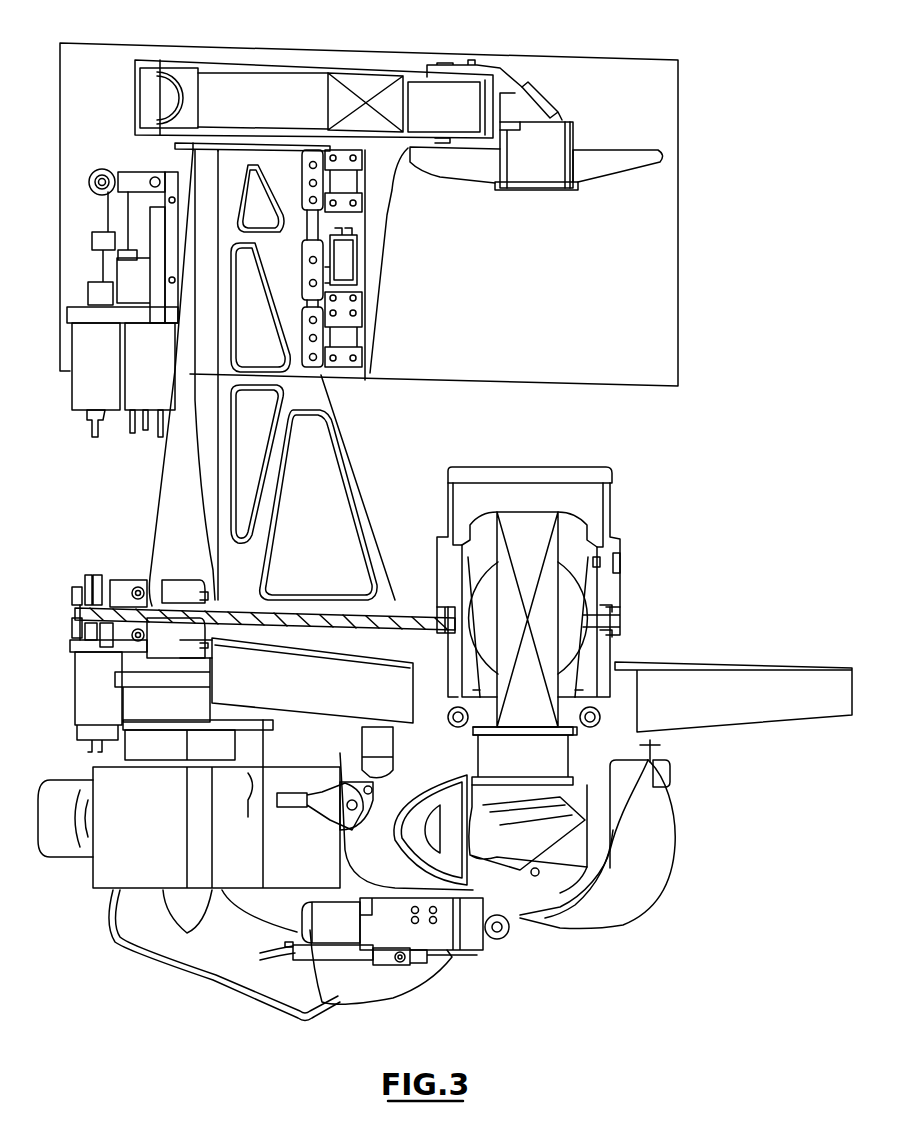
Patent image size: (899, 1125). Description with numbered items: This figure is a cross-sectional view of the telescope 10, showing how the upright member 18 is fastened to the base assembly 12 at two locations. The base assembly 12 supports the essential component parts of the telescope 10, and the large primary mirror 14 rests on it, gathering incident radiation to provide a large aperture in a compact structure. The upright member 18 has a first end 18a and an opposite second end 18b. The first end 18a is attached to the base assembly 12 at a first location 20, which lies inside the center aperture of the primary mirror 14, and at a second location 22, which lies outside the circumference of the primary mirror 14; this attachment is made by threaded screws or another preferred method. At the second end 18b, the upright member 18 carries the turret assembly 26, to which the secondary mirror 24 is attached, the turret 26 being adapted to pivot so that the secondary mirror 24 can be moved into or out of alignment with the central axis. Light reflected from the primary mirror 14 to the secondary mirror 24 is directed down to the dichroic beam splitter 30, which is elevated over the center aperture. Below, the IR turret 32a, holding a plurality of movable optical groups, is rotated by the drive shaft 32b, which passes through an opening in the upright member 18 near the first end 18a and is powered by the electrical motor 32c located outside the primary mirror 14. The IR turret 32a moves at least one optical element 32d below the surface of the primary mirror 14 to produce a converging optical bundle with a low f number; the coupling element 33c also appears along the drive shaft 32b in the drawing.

The telescope 10 is at (700, 403).
The base assembly 12 is at (655, 745).
The primary mirror 14 is at (738, 716).
The upright member 18 is at (320, 418).
The first end 18a is at (377, 643).
The second end 18b is at (270, 157).
The first location 20 is at (427, 643).
The second location 22 is at (183, 665).
The secondary mirror 24 is at (630, 170).
The turret assembly 26 is at (277, 73).
The dichroic beam splitter 30 is at (593, 467).
The IR turret 32a is at (577, 600).
The drive shaft 32b is at (133, 610).
The electrical motor 32c is at (73, 673).
The optical element 32d is at (563, 673).
The coupling 33c is at (627, 623).